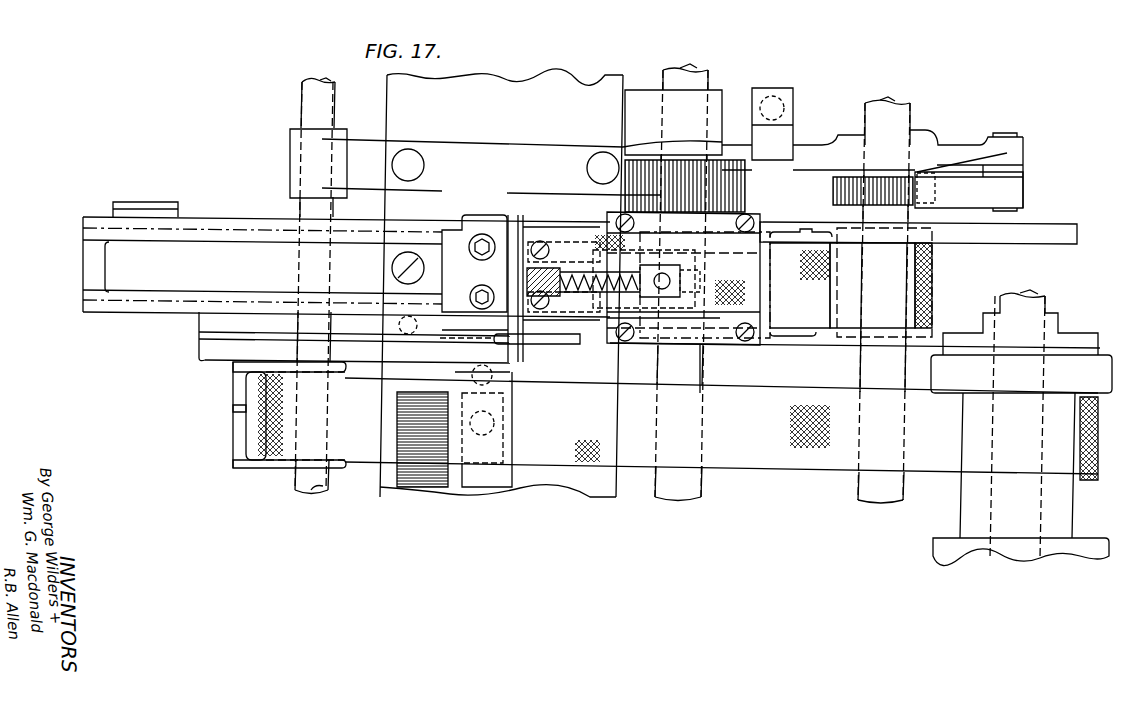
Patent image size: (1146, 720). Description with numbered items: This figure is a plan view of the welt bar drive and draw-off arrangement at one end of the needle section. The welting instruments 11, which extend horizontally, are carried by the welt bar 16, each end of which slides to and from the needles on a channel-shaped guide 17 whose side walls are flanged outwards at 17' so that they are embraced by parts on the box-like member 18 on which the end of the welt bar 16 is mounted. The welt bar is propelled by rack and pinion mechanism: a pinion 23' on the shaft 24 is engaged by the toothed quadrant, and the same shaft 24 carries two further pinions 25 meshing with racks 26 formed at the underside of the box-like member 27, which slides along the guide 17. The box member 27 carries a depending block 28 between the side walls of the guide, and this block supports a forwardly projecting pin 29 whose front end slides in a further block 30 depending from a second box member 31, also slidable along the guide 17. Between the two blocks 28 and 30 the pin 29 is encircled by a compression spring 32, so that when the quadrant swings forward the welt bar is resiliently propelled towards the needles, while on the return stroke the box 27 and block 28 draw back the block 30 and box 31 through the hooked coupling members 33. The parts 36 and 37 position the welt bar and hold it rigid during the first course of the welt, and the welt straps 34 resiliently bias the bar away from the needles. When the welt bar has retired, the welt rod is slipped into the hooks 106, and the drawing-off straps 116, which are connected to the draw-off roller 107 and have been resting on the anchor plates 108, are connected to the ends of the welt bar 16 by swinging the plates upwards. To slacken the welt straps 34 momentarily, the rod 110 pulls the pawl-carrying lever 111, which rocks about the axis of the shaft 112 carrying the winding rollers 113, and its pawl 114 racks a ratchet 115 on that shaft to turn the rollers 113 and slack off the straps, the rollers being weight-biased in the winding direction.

The guide 17 is at (319, 267).
The outward flanges 17' is at (262, 266).
The positioning part 37 is at (152, 202).
The hooks 106 is at (207, 355).
The box-like member 18 is at (512, 200).
The box member 31 is at (586, 200).
The depending block 30 is at (578, 238).
The depending block 28 is at (676, 345).
The box-like member 27 is at (652, 345).
The pin 29 is at (575, 310).
The compression spring 32 is at (610, 310).
The hooked coupling members 33 is at (641, 310).
The positioning part 36 is at (534, 346).
The pinions 25 is at (752, 218).
The welt straps 34 is at (824, 330).
The winding rollers 113 is at (934, 286).
The racks 26 is at (1077, 245).
The pinion 23' is at (730, 163).
The rod 110 is at (780, 106).
The shaft 112 is at (900, 106).
The pawl-carrying lever 111 is at (950, 145).
The pawl 114 is at (993, 193).
The ratchet 115 is at (1007, 153).
The shaft 24 is at (700, 470).
The draw-off roller 107 is at (1082, 437).
The anchor plates 108 is at (242, 466).
The drawing-off straps 116 is at (277, 462).
The welting instruments 11 is at (412, 488).
The welt bar 16 is at (478, 476).